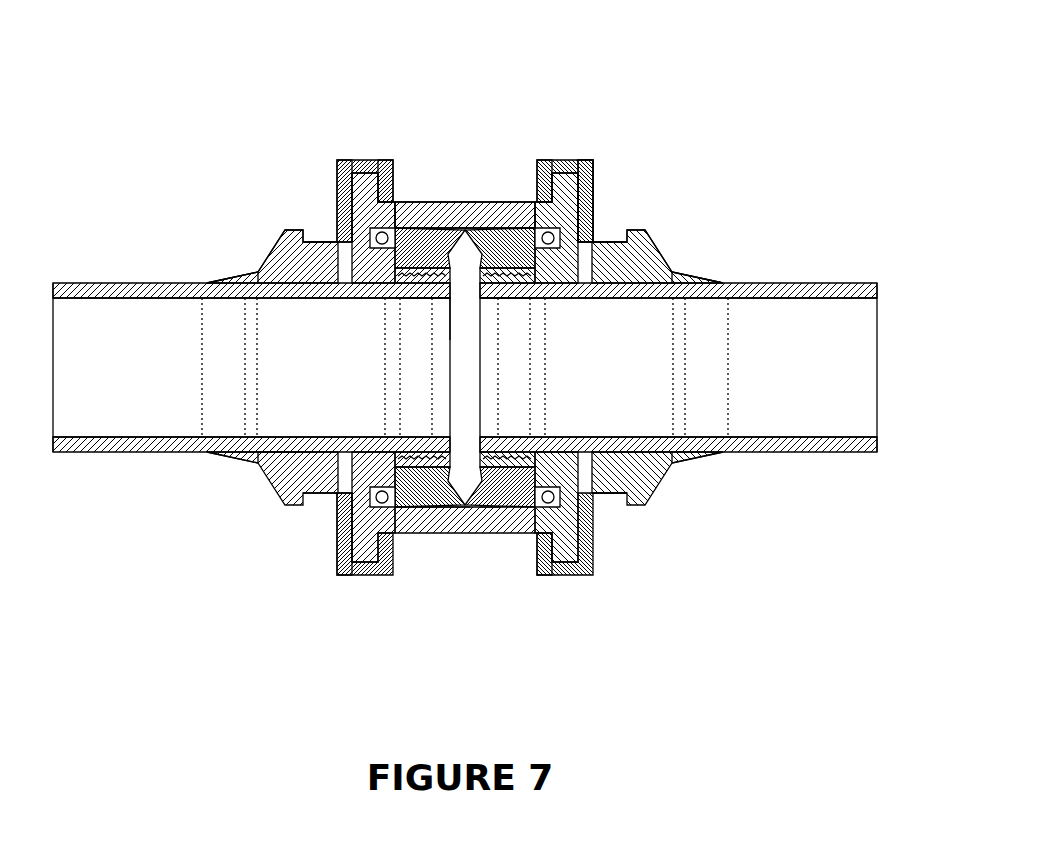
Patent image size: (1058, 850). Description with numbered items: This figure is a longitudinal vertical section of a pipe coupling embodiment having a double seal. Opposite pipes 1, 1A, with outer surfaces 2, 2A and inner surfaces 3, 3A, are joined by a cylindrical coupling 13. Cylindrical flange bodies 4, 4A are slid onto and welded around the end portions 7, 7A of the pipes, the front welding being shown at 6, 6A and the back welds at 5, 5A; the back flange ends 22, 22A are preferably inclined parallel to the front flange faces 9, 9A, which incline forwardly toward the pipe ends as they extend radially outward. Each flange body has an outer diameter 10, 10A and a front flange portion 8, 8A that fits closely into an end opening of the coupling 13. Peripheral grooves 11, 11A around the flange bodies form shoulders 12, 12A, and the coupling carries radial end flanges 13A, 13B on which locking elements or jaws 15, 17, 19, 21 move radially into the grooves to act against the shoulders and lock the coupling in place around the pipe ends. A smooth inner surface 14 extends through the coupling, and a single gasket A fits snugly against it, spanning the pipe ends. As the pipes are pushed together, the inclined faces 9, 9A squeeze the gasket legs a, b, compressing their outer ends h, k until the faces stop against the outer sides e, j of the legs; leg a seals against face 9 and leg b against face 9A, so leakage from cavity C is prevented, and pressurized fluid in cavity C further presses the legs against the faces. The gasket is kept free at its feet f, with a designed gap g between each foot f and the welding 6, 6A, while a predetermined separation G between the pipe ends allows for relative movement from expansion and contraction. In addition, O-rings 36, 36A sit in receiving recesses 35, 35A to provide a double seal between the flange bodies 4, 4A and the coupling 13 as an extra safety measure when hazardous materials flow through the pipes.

The pipe 1 is at (63, 437).
The pipe 1A is at (781, 437).
The outer surface 2 is at (67, 283).
The outer surface 2A is at (860, 298).
The inner surface 3 is at (78, 300).
The inner surface 3A is at (860, 300).
The flange body 4 is at (262, 480).
The flange body 4A is at (655, 493).
The weld 5 is at (243, 278).
The weld 5A is at (698, 276).
The front welding 6 is at (400, 300).
The front welding 6A is at (505, 437).
The end portion 7 is at (440, 300).
The end portion 7A is at (530, 437).
The front flange portion 8 is at (336, 560).
The front flange portion 8A is at (600, 178).
The front flange face 9 is at (402, 535).
The front flange face 9A is at (517, 533).
The outer diameter 10 is at (296, 230).
The outer diameter 10A is at (640, 231).
The peripheral groove 11 is at (322, 240).
The peripheral groove 11A is at (612, 240).
The shoulder 12 is at (360, 298).
The shoulder 12A is at (570, 290).
The cylindrical coupling 13 is at (487, 202).
The radial end flange 13A is at (400, 160).
The radial end flange 13B is at (540, 578).
The inner surface 14 is at (465, 202).
The locking element 15 is at (305, 162).
The locking element 17 is at (360, 578).
The locking element 19 is at (573, 160).
The locking element 21 is at (576, 565).
The back flange end 22 is at (265, 260).
The back flange end 22A is at (665, 248).
The receiving recess 35 is at (413, 160).
The receiving recess 35A is at (513, 160).
The O-ring 36 is at (366, 160).
The O-ring 36A is at (535, 160).
The gasket A is at (466, 273).
The gasket leg b is at (465, 454).
The cavity C is at (440, 300).
The predetermined separation G is at (445, 335).
The gasket leg a is at (462, 540).
The outer side of gasket leg e is at (428, 515).
The gasket foot f is at (395, 298).
The designed gap g is at (515, 300).
The outer end of gasket leg h is at (295, 447).
The outer side of gasket leg j is at (500, 550).
The outer end of gasket leg k is at (598, 497).